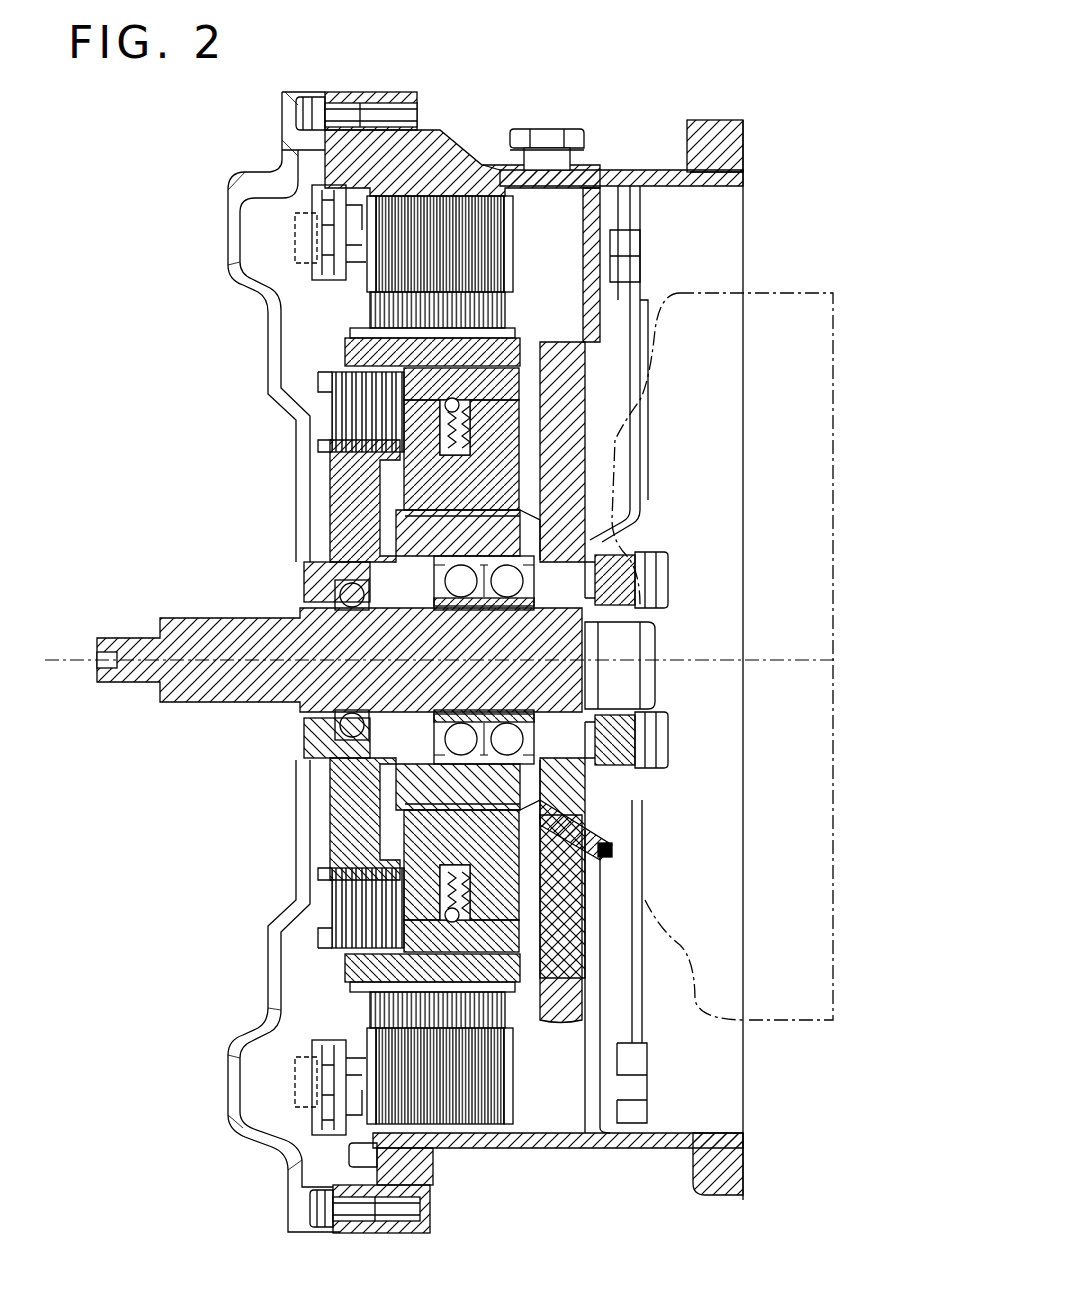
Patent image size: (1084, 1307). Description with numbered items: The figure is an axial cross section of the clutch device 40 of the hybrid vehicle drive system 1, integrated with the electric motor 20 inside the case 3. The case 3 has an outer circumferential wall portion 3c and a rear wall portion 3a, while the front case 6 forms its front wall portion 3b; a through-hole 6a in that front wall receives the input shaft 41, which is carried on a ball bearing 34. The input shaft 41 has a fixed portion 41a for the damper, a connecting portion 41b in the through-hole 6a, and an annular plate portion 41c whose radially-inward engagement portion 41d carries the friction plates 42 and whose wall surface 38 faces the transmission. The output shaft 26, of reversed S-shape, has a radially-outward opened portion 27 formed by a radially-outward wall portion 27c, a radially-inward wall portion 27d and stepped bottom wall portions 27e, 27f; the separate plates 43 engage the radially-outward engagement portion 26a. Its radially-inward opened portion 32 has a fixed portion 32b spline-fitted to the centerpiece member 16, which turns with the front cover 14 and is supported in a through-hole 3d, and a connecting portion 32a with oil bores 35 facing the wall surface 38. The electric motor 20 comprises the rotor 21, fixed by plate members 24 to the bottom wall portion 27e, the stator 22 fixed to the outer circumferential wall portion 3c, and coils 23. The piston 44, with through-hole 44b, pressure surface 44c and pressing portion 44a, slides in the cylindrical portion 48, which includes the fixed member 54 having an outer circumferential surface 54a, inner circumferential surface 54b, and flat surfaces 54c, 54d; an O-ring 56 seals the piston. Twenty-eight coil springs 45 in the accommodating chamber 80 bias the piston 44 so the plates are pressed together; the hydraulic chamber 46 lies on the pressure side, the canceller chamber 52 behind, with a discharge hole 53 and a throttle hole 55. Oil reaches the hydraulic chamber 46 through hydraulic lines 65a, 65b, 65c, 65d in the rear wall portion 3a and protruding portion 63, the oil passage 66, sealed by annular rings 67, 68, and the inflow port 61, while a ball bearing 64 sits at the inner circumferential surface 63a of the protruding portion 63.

The drive system 1 is at (200, 228).
The case 3 is at (430, 152).
The rear wall portion 3a is at (585, 220).
The front wall portion 3b is at (265, 400).
The outer circumferential wall portion 3c is at (510, 182).
The through-hole 3d is at (632, 598).
The front case 6 is at (290, 165).
The through-hole 6a is at (300, 740).
The front cover 14 is at (760, 1040).
The centerpiece member 16 is at (620, 735).
The electric motor 20 is at (474, 168).
The rotor 21 is at (355, 305).
The stator 22 is at (560, 150).
The coils 23 is at (507, 243).
The plate members 24 is at (560, 292).
The output shaft 26 is at (460, 440).
The radially-outward engagement portion 26a is at (375, 960).
The radially-outward opened portion 27 is at (492, 322).
The radially-outward wall portion 27c is at (455, 306).
The radially-inward wall portion 27d is at (480, 510).
The bottom wall portion 27e is at (560, 345).
The bottom wall portion 27f is at (490, 460).
The radially-inward opened portion 32 is at (395, 545).
The connecting portion 32a is at (330, 572).
The fixed portion 32b is at (540, 640).
The ball bearing 34 is at (345, 595).
The oil bore 35 is at (370, 555).
The wall surface 38 is at (400, 830).
The clutch device 40 is at (244, 982).
The input shaft 41 is at (190, 700).
The fixed portion 41a is at (190, 620).
The connecting portion 41b is at (250, 750).
The annular plate portion 41c is at (320, 500).
The radially-inward engagement portion 41d is at (300, 440).
The friction plates 42 is at (330, 428).
The separate plates 43 is at (410, 380).
The piston 44 is at (560, 420).
The pressing portion 44a is at (335, 930).
The through-hole 44b is at (640, 845).
The pressure surface 44c is at (380, 860).
The coil springs 45 is at (500, 488).
The hydraulic chamber 46 is at (300, 465).
The cylindrical portion 48 is at (500, 500).
The canceller chamber 52 is at (600, 940).
The discharge hole 53 is at (605, 895).
The fixed member 54 is at (330, 455).
The outer circumferential surface 54a is at (360, 895).
The inner circumferential surface 54b is at (310, 820).
The input-shaft-side flat surface 54c is at (380, 880).
The output-shaft-side flat surface 54d is at (600, 915).
The throttle hole 55 is at (330, 880).
The O-ring 56 is at (345, 352).
The inflow port 61 is at (650, 810).
The protruding portion 63 is at (640, 575).
The inner circumferential surface 63a is at (620, 688).
The ball bearing 64 is at (625, 620).
The hydraulic line 65a is at (580, 965).
The hydraulic line 65b is at (575, 835).
The hydraulic line 65c is at (610, 770).
The hydraulic line 65d is at (560, 800).
The oil passage 66 is at (320, 790).
The annular ring 67 is at (330, 520).
The annular ring 68 is at (620, 512).
The accommodating chamber 80 is at (560, 410).